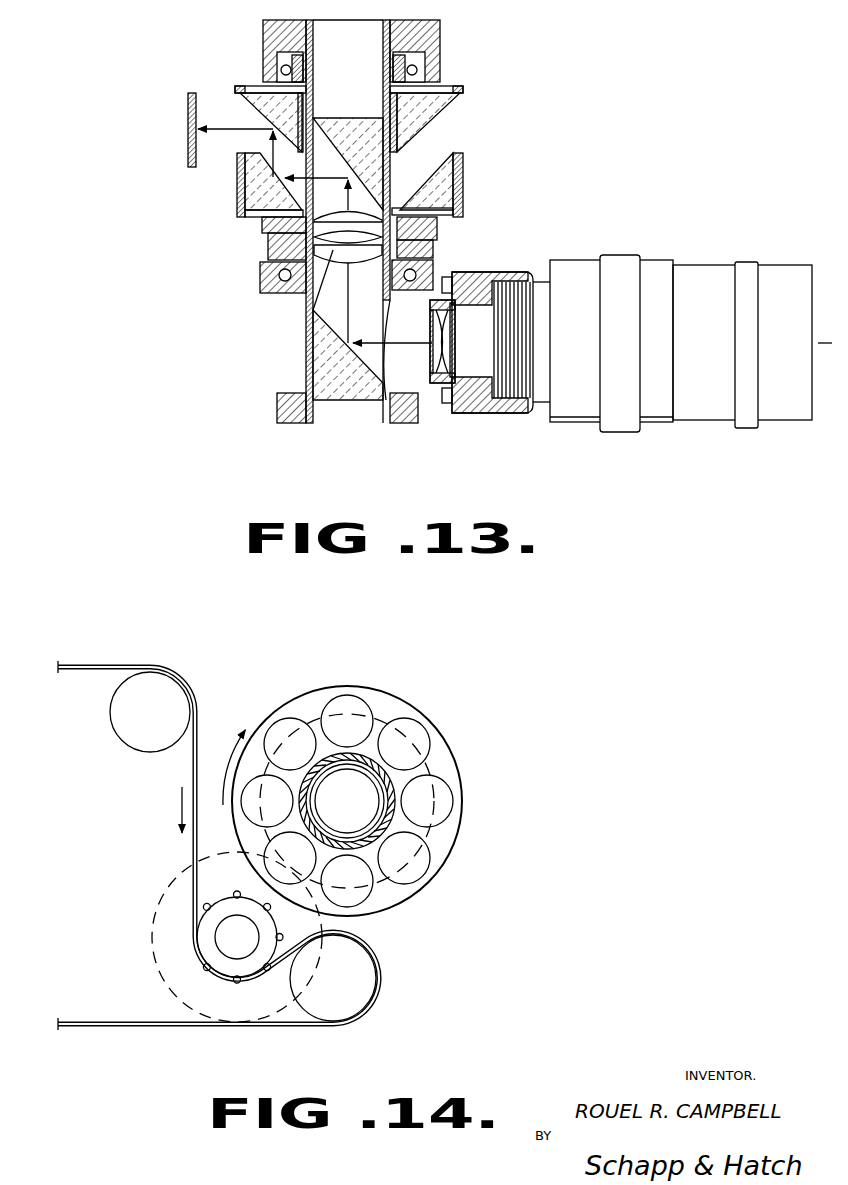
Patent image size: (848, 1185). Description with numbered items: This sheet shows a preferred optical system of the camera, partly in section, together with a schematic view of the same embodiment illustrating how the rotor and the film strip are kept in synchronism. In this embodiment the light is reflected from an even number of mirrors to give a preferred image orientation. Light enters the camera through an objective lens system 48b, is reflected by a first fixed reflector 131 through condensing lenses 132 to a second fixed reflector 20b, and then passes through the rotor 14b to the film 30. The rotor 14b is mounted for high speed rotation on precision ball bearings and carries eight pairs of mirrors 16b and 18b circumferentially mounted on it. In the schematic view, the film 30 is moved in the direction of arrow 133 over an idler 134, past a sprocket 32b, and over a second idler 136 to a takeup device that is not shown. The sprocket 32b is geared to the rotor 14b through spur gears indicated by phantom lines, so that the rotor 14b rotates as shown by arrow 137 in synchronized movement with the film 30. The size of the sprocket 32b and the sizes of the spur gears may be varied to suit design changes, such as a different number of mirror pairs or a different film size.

In FIG. 13, the rotor 14b is at (248, 79).
In FIG. 14, the rotor 14b is at (280, 732).
In FIG. 13, the mirror 18b is at (288, 108).
In FIG. 13, the second fixed reflector 20b is at (373, 177).
In FIG. 13, the film 30 is at (188, 152).
In FIG. 14, the film 30 is at (190, 764).
In FIG. 13, the mirror 16b is at (255, 190).
In FIG. 13, the condensing lenses 132 is at (312, 311).
In FIG. 13, the first fixed reflector 131 is at (325, 362).
In FIG. 13, the objective lens system 48b is at (625, 256).
In FIG. 14, the arrow 137 is at (240, 738).
In FIG. 14, the idler 134 is at (126, 733).
In FIG. 14, the arrow 133 is at (179, 814).
In FIG. 14, the sprocket 32b is at (197, 936).
In FIG. 14, the idler 136 is at (377, 984).